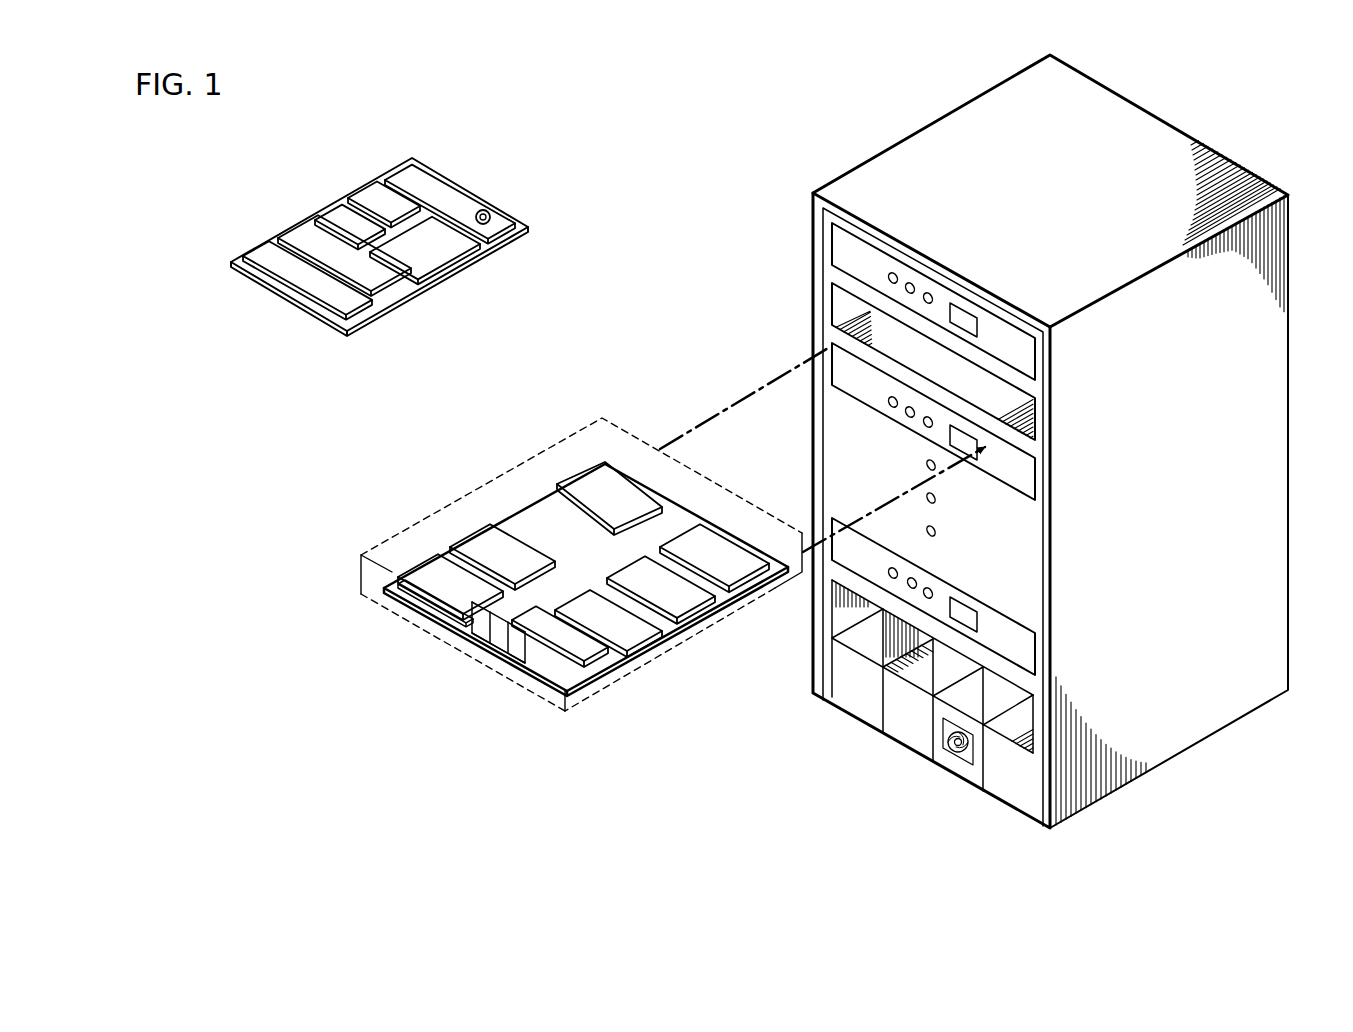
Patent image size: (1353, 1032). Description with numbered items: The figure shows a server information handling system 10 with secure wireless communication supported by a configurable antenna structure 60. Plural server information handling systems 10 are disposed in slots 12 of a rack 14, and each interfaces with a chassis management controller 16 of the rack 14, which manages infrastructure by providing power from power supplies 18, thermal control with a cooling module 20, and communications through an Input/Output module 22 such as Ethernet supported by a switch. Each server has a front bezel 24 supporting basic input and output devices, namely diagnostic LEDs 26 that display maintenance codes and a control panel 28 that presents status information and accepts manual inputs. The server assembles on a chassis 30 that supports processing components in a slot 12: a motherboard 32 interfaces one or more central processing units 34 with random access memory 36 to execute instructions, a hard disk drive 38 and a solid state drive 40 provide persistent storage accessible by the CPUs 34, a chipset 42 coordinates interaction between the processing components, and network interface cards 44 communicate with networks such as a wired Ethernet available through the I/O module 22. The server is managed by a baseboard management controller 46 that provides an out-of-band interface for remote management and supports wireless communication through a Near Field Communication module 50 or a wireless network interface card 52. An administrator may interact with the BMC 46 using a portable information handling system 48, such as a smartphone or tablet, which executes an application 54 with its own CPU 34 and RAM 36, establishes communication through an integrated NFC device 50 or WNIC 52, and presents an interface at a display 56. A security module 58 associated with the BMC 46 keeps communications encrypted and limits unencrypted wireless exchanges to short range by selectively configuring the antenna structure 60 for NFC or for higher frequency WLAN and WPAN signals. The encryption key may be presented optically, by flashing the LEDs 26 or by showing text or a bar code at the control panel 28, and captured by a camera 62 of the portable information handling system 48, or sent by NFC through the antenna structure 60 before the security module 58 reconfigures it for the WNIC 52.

The server information handling system 10 is at (757, 242).
The slot 12 is at (803, 303).
The rack 14 is at (877, 157).
The chassis management controller 16 is at (848, 620).
The power supply 18 is at (840, 683).
The cooling module 20 is at (957, 762).
The Input/Output module 22 is at (1025, 792).
The front bezel 24 is at (1035, 656).
The diagnostic LEDs 26 is at (893, 273).
The control panel 28 is at (962, 313).
The chassis 30 is at (514, 464).
The motherboard 32 is at (627, 475).
The central processing unit 34 is at (370, 193).
The random access memory 36 is at (333, 208).
The hard disk drive 38 is at (578, 480).
The solid state drive 40 is at (758, 584).
The chipset 42 is at (596, 666).
The network interface card 44 is at (710, 619).
The baseboard management controller 46 is at (467, 598).
The portable information handling system 48 is at (478, 186).
The Near Field Communication module 50 is at (460, 267).
The wireless network interface card 52 is at (298, 228).
The application 54 is at (402, 170).
The display 56 is at (260, 257).
The security module 58 is at (412, 623).
The antenna structure 60 is at (514, 665).
The camera 62 is at (502, 208).